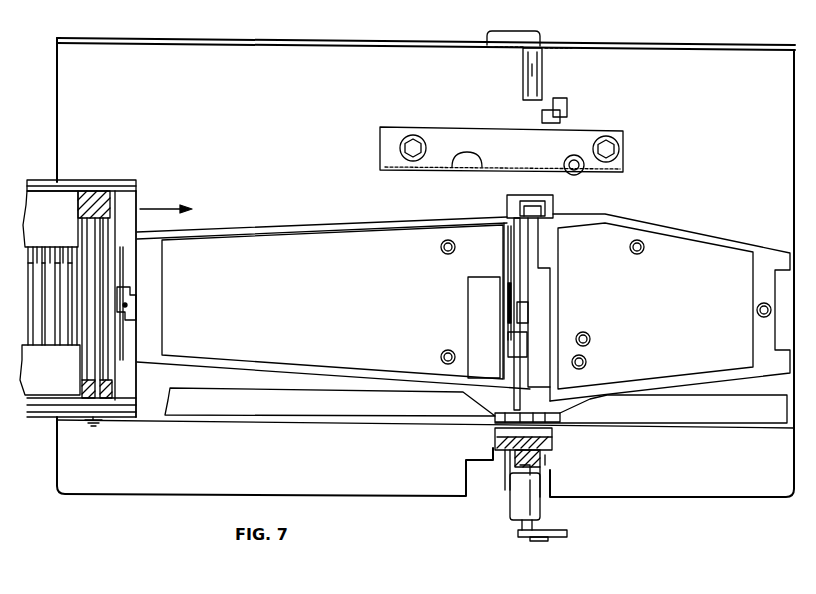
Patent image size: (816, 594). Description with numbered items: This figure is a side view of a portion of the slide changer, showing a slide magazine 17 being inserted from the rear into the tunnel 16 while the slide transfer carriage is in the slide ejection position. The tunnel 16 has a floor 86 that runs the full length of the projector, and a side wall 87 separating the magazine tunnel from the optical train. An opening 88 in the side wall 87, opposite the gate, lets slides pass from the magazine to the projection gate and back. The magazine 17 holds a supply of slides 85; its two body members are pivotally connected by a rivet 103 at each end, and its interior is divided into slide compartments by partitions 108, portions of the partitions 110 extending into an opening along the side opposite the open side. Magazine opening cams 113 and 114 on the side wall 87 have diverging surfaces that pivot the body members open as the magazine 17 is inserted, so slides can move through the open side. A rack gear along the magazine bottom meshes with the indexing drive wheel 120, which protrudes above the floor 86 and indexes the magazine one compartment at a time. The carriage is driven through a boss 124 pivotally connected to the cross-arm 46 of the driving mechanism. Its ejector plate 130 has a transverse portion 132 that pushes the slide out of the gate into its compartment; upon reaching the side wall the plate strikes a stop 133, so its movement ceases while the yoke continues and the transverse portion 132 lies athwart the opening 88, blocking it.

The side wall 87 is at (418, 55).
The slide magazine 17 is at (121, 182).
The partitions 108 is at (80, 205).
The tunnel 16 is at (396, 165).
The opening 88 is at (508, 205).
The slide 85 is at (100, 245).
The ejector plate 130 is at (510, 251).
The rivet 103 is at (135, 303).
The magazine opening cam 113 is at (333, 322).
The magazine opening cam 114 is at (675, 320).
The transverse portion of ejector plate 132 is at (522, 299).
The stop 133 is at (522, 320).
The partitions 110 is at (22, 348).
The floor 86 is at (147, 417).
The indexing drive wheel 120 is at (578, 413).
The boss 124 is at (537, 508).
The cross-arm 46 is at (553, 540).